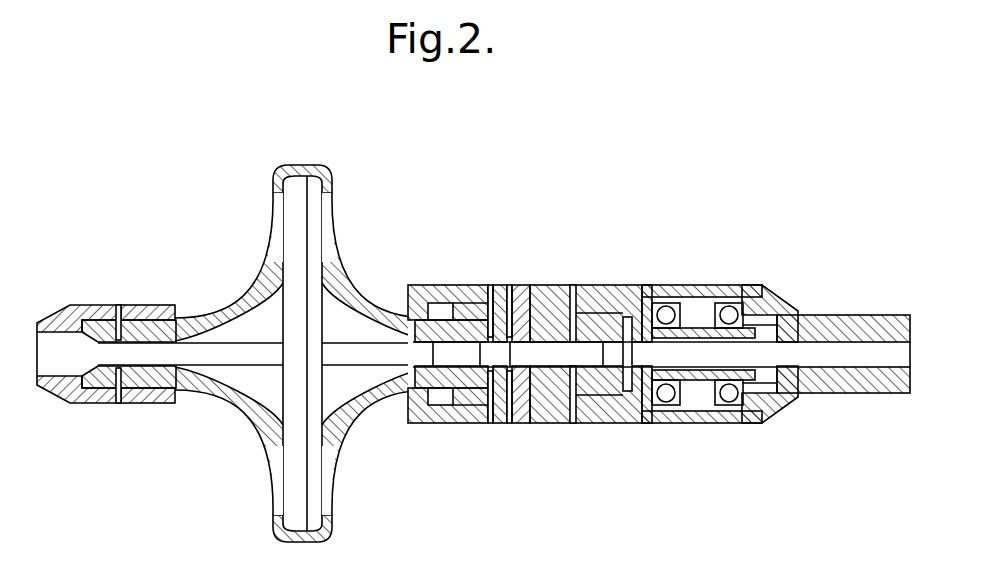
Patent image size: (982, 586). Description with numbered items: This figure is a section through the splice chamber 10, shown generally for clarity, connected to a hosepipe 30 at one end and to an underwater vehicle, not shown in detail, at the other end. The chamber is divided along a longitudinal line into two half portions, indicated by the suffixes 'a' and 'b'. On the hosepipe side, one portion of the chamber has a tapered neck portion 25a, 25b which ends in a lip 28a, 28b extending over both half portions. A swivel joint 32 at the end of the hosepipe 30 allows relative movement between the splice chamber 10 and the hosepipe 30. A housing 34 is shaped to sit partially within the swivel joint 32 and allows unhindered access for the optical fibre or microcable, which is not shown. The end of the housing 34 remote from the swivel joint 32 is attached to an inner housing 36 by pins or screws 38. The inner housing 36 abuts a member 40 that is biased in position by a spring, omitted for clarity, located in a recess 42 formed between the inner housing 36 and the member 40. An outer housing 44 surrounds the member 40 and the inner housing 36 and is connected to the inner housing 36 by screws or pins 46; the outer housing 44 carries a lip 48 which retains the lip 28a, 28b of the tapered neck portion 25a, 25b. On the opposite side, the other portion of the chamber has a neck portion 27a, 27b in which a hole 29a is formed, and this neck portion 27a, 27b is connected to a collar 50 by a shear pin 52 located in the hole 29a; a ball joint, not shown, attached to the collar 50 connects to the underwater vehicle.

The splice chamber 10 is at (342, 158).
The tapered neck portion 25a is at (352, 283).
The tapered neck portion 25b is at (397, 374).
The neck portion 27a is at (148, 317).
The neck portion 27b is at (130, 405).
The lip 28a is at (428, 287).
The lip 28b is at (415, 388).
The hole 29a is at (116, 306).
The hosepipe 30 is at (838, 315).
The swivel joint 32 is at (693, 392).
The housing 34 is at (624, 285).
The inner housing 36 is at (605, 424).
The pins or screws 38 is at (571, 285).
The member 40 is at (480, 424).
The recess 42 is at (490, 287).
The outer housing 44 is at (450, 424).
The screws or pins 46 is at (518, 287).
The lip 48 is at (418, 424).
The collar 50 is at (60, 400).
The shear pin 52 is at (110, 405).